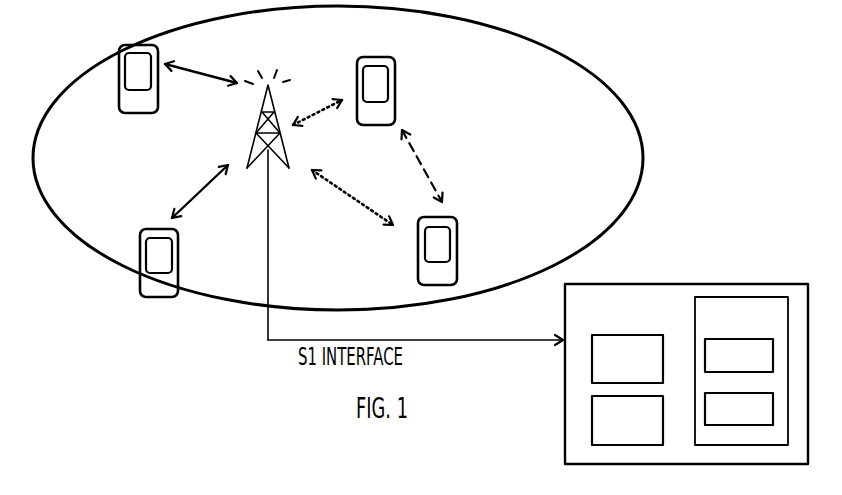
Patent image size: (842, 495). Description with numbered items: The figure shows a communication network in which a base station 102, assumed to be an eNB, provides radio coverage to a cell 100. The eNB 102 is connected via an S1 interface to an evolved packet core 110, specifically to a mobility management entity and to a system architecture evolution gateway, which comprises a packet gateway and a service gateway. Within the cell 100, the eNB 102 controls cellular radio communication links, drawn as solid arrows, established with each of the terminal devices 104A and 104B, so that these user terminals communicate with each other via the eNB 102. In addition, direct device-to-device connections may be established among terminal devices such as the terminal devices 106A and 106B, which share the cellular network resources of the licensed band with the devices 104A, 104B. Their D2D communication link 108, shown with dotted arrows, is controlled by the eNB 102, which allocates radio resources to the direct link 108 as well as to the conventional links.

The cell 100 is at (570, 58).
The base station 102 is at (258, 112).
The terminal device 104A is at (140, 252).
The terminal device 104B is at (118, 61).
The terminal device 106A is at (396, 60).
The terminal device 106B is at (457, 221).
The D2D communication link 108 is at (418, 158).
The evolved packet core 110 is at (686, 374).